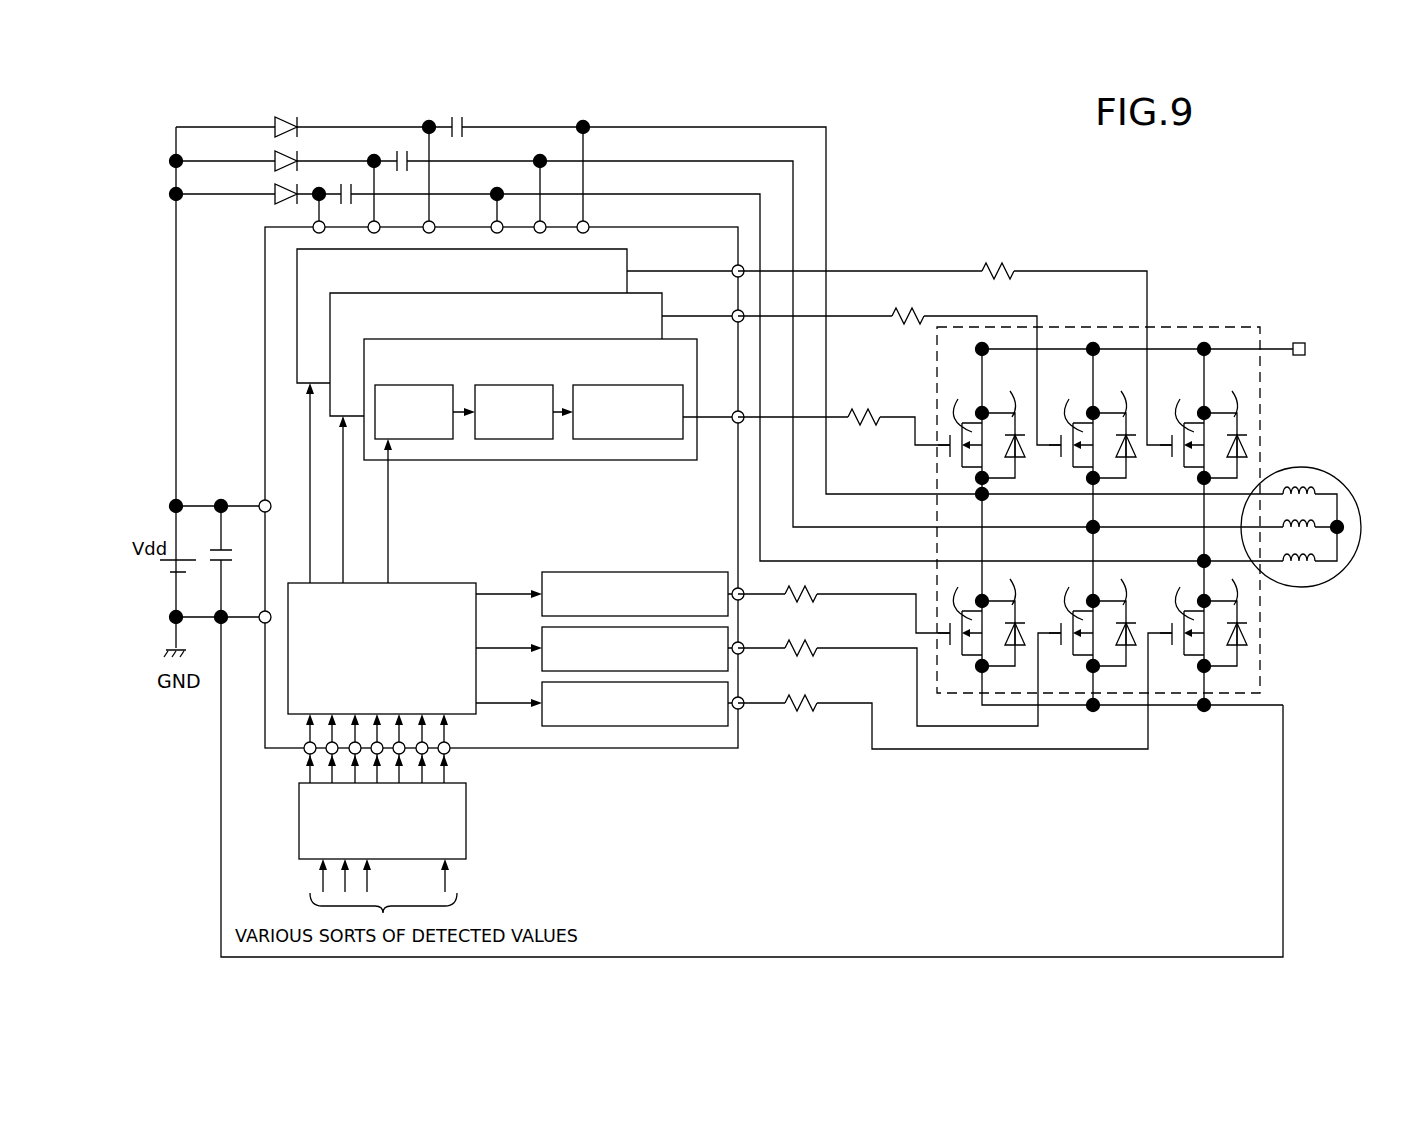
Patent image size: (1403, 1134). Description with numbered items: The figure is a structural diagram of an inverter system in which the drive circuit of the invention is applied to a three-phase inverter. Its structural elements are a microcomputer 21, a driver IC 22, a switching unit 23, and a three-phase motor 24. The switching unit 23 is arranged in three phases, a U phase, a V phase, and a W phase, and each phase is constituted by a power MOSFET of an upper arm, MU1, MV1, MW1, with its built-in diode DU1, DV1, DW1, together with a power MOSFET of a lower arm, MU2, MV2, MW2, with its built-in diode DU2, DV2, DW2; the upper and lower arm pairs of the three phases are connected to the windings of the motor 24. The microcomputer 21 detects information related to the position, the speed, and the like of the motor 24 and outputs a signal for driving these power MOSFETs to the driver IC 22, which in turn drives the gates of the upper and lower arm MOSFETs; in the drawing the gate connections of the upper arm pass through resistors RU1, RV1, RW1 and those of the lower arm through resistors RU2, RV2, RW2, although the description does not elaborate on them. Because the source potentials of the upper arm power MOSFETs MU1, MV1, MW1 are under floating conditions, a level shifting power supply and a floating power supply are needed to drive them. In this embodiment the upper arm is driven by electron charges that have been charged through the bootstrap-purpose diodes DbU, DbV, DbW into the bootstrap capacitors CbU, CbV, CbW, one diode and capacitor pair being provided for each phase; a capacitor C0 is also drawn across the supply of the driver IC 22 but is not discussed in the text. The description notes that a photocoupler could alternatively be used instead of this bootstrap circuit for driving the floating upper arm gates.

The microcomputer 21 is at (466, 820).
The driver IC 22 is at (603, 750).
The switching unit 23 is at (1123, 483).
The 3-phase motor 24 is at (1331, 468).
The bootstrap-purpose diode DbU is at (261, 121).
The bootstrap-purpose diode DbV is at (261, 154).
The bootstrap-purpose diode DbW is at (261, 188).
The bootstrap capacitor CbU is at (437, 116).
The bootstrap capacitor CbV is at (382, 150).
The bootstrap capacitor CbW is at (325, 183).
The power supply capacitor C0 is at (211, 544).
The gate resistor (U upper) RU1 is at (844, 412).
The gate resistor (V upper) RV1 is at (899, 362).
The gate resistor (W upper) RW1 is at (955, 340).
The gate resistor (U lower) RU2 is at (844, 609).
The gate resistor (V lower) RV2 is at (899, 679).
The gate resistor (W lower) RW2 is at (955, 691).
The power MOSFET of upper arm MU1 is at (981, 428).
The power MOSFET of upper arm MV1 is at (1092, 428).
The power MOSFET of upper arm MW1 is at (1203, 428).
The power MOSFET of lower arm MU2 is at (981, 621).
The power MOSFET of lower arm MV2 is at (1092, 621).
The power MOSFET of lower arm MW2 is at (1203, 621).
The built-in diode DU1 is at (1011, 410).
The built-in diode DV1 is at (1121, 410).
The built-in diode DW1 is at (1235, 410).
The built-in diode DU2 is at (1011, 605).
The built-in diode DV2 is at (1121, 605).
The built-in diode DW2 is at (1235, 605).